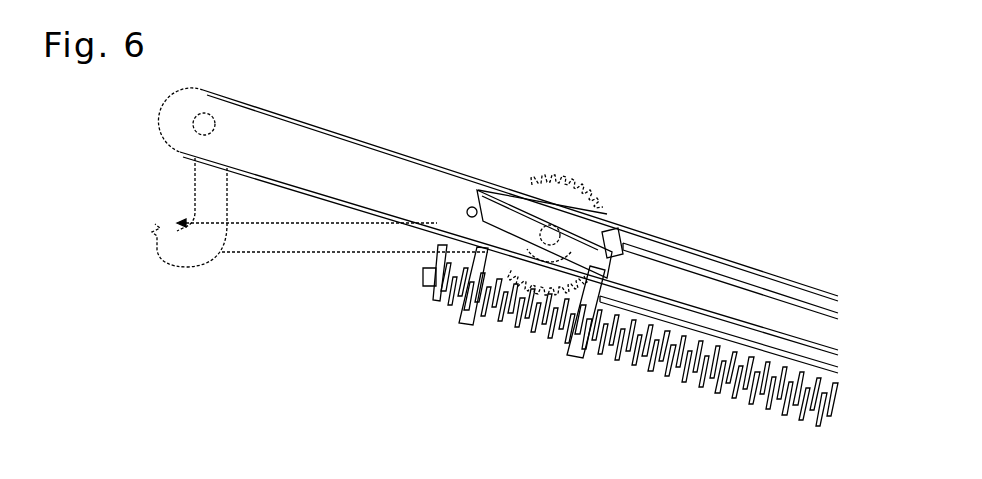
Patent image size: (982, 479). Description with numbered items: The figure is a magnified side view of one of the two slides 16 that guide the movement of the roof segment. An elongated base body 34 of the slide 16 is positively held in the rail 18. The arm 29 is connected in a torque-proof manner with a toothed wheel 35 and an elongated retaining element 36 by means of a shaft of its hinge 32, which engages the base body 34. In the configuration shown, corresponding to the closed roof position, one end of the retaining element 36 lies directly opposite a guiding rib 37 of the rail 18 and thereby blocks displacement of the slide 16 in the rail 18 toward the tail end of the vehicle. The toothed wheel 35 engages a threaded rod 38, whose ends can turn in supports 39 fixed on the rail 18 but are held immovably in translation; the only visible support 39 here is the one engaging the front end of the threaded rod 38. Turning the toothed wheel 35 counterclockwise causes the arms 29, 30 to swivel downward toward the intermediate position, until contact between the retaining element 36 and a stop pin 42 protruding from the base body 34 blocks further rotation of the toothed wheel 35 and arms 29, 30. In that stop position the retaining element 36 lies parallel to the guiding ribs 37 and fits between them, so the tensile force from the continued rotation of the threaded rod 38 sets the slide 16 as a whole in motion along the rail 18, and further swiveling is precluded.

The slide 16 is at (498, 221).
The elongated base body 34 is at (327, 155).
The rail 18 is at (498, 221).
The arm 30 is at (294, 235).
The arm 29 is at (318, 251).
The retaining element 36 is at (522, 217).
The hinge 32 is at (553, 236).
The toothed wheel 35 is at (585, 198).
The stop pin 42 is at (467, 213).
The support 39 is at (437, 281).
The guiding rib 37 is at (757, 293).
The threaded rod 38 is at (718, 374).